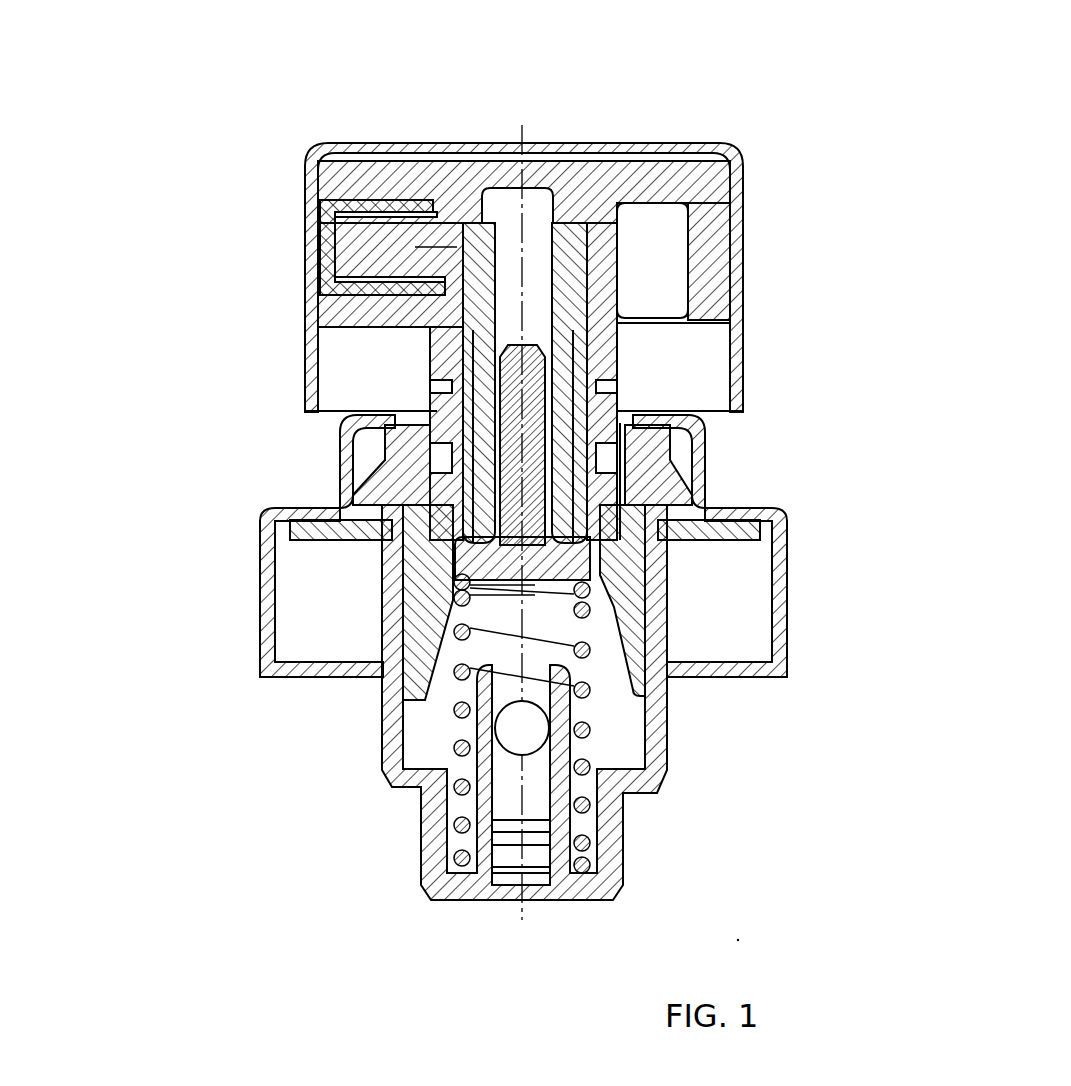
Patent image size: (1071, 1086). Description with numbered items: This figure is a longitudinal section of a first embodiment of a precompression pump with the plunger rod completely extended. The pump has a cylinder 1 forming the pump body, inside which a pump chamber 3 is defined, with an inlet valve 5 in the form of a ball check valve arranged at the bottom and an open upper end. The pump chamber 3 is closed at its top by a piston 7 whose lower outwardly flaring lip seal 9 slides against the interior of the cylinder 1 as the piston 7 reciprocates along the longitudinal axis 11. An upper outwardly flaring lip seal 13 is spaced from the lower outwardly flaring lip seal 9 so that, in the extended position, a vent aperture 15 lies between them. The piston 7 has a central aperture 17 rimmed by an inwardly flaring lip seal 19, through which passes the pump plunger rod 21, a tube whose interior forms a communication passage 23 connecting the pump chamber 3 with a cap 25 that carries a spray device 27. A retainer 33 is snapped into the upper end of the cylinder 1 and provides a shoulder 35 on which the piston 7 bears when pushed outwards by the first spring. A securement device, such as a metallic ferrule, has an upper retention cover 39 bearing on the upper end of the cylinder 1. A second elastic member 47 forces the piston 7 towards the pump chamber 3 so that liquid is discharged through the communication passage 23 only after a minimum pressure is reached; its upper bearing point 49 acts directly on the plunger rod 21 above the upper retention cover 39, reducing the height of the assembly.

The cylinder 1 is at (383, 738).
The pump chamber 3 is at (617, 723).
The inlet valve 5 is at (513, 727).
The piston 7 is at (412, 587).
The lower outwardly flaring lip seal 9 is at (655, 700).
The longitudinal axis 11 is at (525, 132).
The upper outwardly flaring lip seal 13 is at (403, 570).
The vent aperture 15 is at (645, 612).
The central aperture 17 is at (452, 352).
The inwardly flaring lip seal 19 is at (470, 525).
The pump plunger rod 21 is at (585, 348).
The communication passage 23 is at (535, 305).
The cap 25 is at (485, 147).
The spray device 27 is at (358, 248).
The retainer 33 is at (660, 453).
The shoulder 35 is at (655, 510).
The upper retention cover 39 is at (660, 420).
The second elastic member 47 is at (430, 392).
The upper bearing point 49 is at (440, 335).